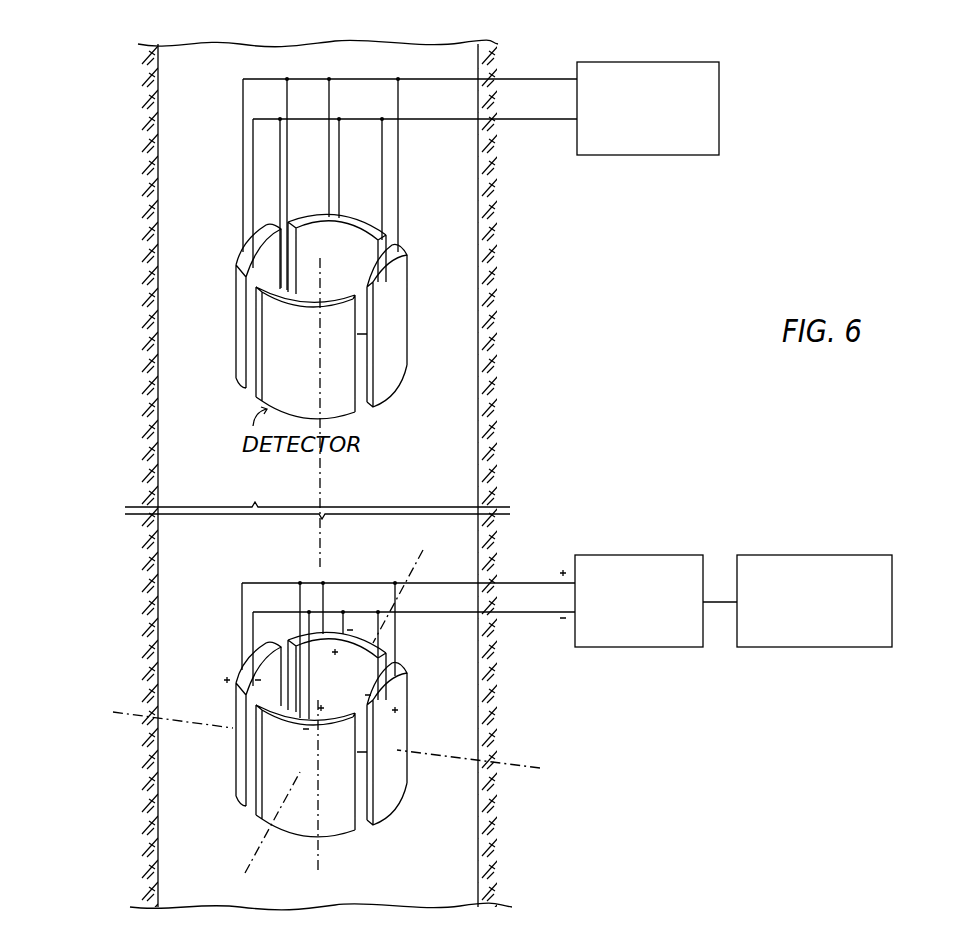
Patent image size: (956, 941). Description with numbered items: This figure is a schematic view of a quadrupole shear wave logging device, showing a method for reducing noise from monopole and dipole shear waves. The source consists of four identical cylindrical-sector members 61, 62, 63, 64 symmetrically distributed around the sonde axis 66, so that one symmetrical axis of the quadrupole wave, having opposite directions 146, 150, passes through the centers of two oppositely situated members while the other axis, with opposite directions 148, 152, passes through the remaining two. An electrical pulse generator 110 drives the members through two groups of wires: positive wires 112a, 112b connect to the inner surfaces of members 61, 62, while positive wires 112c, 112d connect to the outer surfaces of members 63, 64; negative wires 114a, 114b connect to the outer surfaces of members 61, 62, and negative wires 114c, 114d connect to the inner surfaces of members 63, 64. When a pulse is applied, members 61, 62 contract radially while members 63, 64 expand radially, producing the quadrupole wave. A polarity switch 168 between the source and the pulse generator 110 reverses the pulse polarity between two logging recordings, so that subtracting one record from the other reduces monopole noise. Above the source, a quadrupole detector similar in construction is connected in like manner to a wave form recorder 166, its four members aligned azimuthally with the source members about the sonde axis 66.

The member 61 is at (365, 667).
The member 62 is at (295, 815).
The member 63 is at (237, 752).
The member 64 is at (390, 790).
The sonde axis 66 is at (323, 263).
The electrical pulse generator 110 is at (830, 647).
The wire 112a is at (331, 598).
The wire 112b is at (298, 598).
The wire 112c is at (240, 634).
The wire 112d is at (398, 629).
The wire 114a is at (347, 625).
The wire 114b is at (311, 678).
The wire 114c is at (250, 640).
The wire 114d is at (385, 640).
The direction 146 is at (481, 766).
The direction 148 is at (423, 550).
The direction 150 is at (154, 713).
The direction 152 is at (266, 801).
The wave form recorder 166 is at (695, 155).
The polarity switch 168 is at (678, 647).